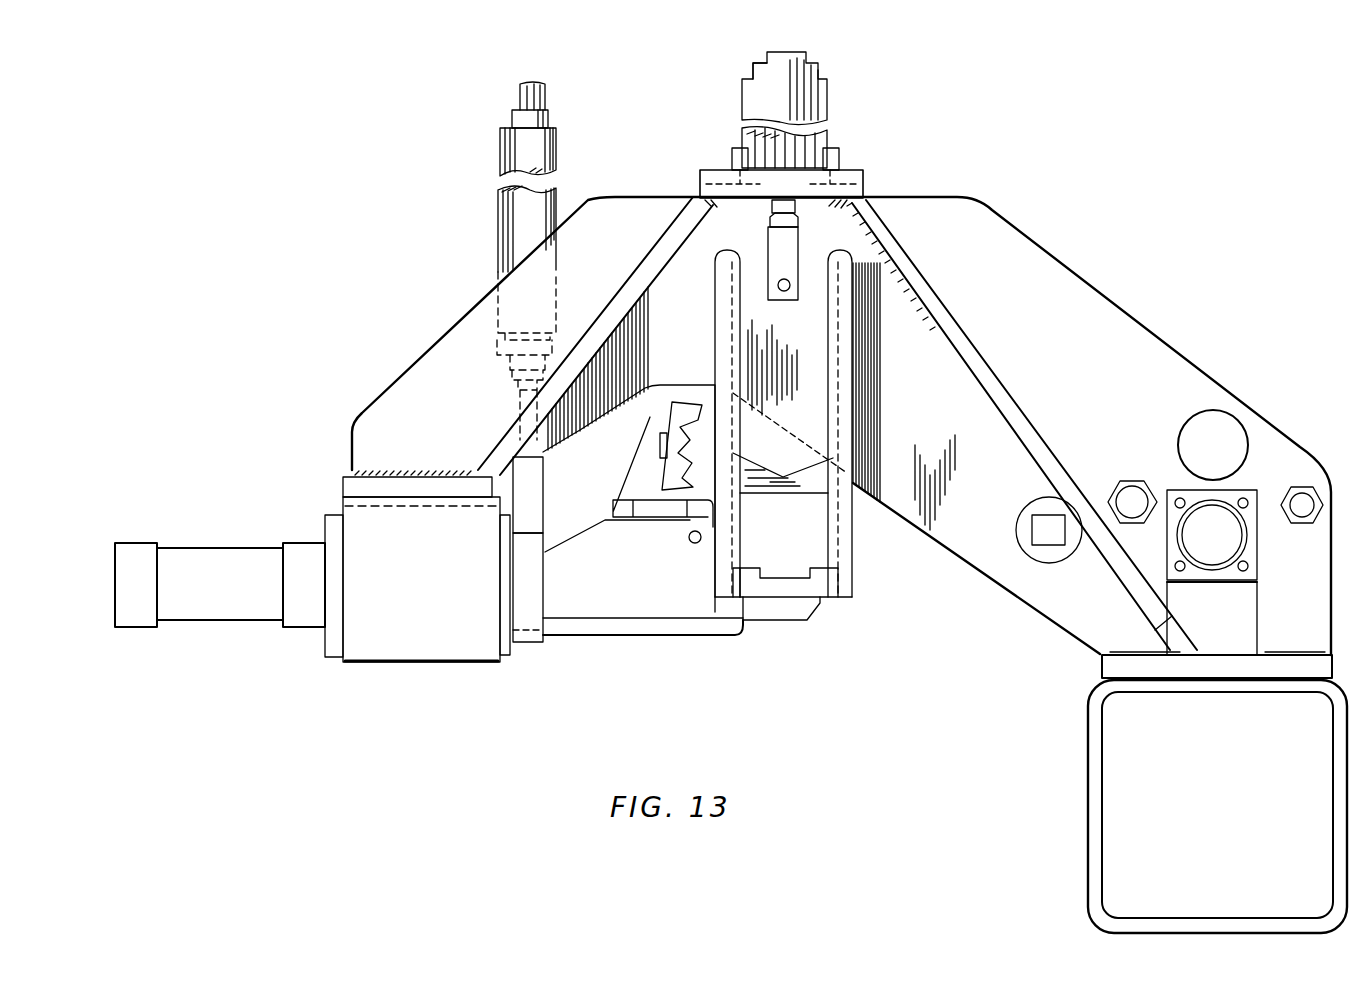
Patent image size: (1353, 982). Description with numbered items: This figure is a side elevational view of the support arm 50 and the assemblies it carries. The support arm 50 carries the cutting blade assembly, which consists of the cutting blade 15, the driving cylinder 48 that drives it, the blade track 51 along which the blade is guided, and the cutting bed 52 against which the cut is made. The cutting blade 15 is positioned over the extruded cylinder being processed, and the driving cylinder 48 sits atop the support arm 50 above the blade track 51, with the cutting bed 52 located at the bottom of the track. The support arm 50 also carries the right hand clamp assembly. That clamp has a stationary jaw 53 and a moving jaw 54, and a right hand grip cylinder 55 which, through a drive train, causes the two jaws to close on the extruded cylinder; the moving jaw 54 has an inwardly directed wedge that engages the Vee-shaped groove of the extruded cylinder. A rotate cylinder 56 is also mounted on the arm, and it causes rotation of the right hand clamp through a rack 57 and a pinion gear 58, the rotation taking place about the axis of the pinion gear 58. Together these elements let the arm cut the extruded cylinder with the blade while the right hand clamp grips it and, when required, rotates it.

The cutting blade 15 is at (813, 350).
The driving cylinder 48 is at (823, 97).
The support arm 50 is at (1120, 335).
The blade track 51 is at (852, 370).
The cutting bed 52 is at (820, 584).
The stationary jaw 53 is at (758, 612).
The moving jaw 54 is at (680, 428).
The right hand grip cylinder 55 is at (240, 608).
The rotate cylinder 56 is at (525, 150).
The rack 57 is at (530, 488).
The pinion gear 58 is at (533, 595).